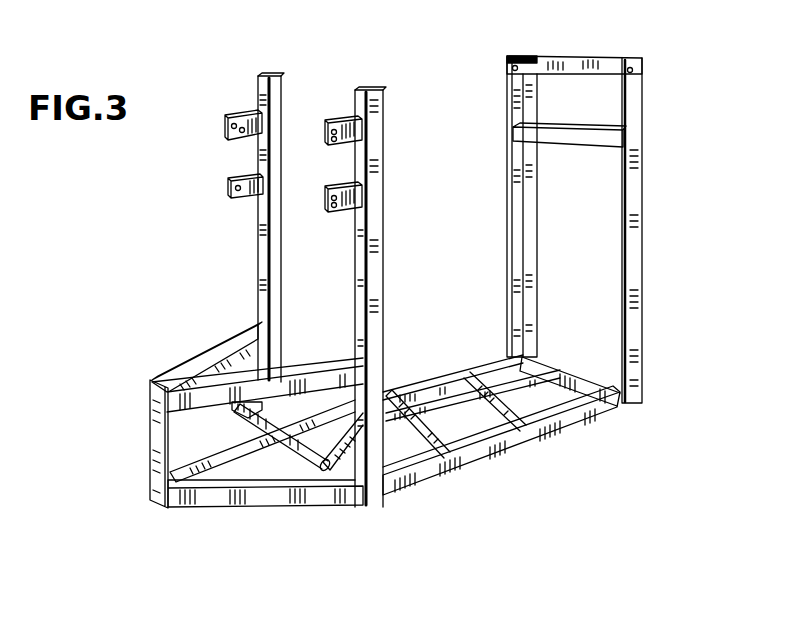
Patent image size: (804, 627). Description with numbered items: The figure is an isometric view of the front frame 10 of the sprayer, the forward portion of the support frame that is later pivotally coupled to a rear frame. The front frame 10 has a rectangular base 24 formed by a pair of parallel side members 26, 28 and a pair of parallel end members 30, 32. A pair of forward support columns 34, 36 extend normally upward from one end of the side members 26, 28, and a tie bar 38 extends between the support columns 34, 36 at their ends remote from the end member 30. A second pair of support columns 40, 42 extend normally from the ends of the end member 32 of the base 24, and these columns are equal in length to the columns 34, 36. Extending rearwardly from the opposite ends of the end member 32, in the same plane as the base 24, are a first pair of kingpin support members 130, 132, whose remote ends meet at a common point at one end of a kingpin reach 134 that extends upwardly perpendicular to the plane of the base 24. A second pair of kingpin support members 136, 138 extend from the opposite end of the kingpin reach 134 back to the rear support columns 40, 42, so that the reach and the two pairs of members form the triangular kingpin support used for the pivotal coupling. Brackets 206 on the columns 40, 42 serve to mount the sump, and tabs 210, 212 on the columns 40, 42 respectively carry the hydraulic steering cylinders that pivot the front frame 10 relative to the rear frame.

The front frame 10 is at (655, 308).
The rectangular base 24 is at (603, 418).
The side member 26 is at (522, 442).
The side member 28 is at (417, 385).
The end member 30 is at (558, 372).
The end member 32 is at (297, 460).
The forward support column 34 is at (633, 212).
The forward support column 36 is at (517, 190).
The tie bar 38 is at (587, 60).
The support column 40 is at (375, 268).
The support column 42 is at (262, 231).
The kingpin support member 130 is at (210, 500).
The kingpin support member 132 is at (193, 463).
The kingpin reach 134 is at (152, 440).
The kingpin support member 136 is at (307, 372).
The kingpin support member 138 is at (197, 350).
The bracket 206 is at (337, 118).
The tab 210 is at (323, 462).
The tab 212 is at (247, 410).